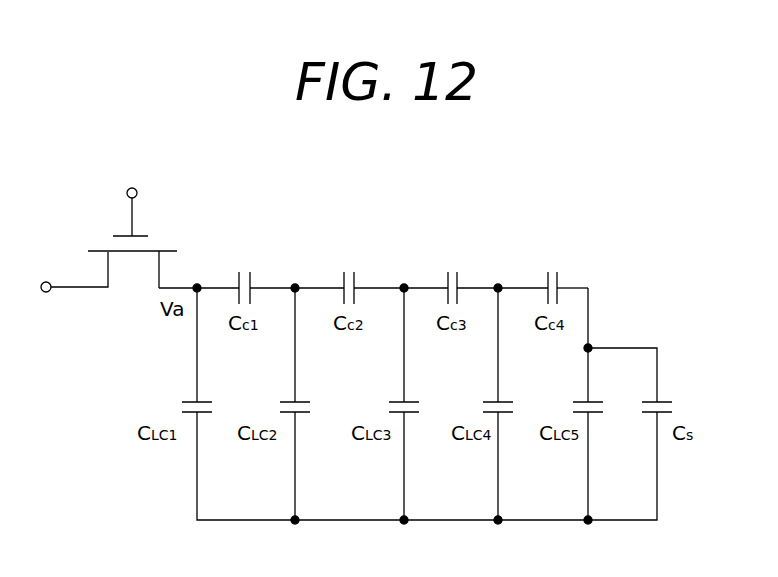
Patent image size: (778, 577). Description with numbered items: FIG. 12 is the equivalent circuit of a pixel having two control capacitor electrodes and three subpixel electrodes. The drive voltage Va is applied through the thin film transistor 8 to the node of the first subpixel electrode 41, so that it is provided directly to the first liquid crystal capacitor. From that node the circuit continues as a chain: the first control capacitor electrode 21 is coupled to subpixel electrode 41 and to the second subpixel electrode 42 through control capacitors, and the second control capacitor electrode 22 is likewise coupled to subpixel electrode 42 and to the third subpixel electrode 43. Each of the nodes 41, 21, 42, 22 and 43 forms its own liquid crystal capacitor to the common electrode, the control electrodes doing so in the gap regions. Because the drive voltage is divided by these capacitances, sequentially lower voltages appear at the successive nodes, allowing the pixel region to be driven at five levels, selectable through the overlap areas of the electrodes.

The thin film transistor 8 is at (98, 228).
The subpixel electrode 41 is at (198, 286).
The control capacitor electrode 21 is at (295, 285).
The subpixel electrode 42 is at (404, 285).
The control capacitor electrode 22 is at (498, 285).
The subpixel electrode 43 is at (588, 286).